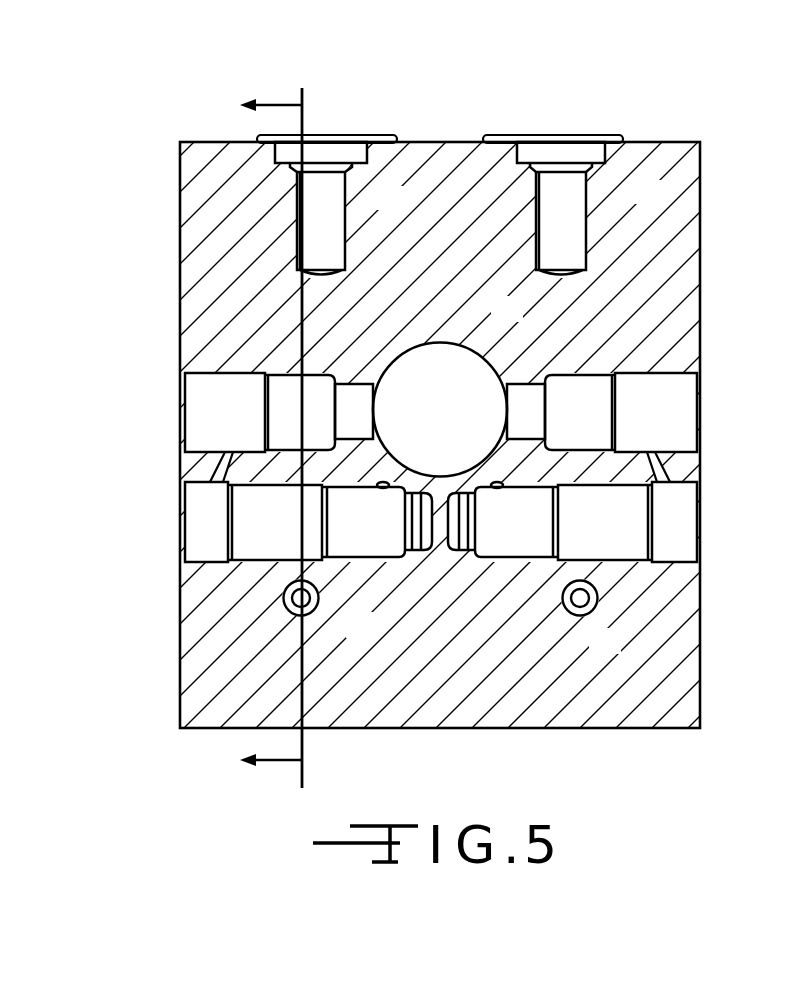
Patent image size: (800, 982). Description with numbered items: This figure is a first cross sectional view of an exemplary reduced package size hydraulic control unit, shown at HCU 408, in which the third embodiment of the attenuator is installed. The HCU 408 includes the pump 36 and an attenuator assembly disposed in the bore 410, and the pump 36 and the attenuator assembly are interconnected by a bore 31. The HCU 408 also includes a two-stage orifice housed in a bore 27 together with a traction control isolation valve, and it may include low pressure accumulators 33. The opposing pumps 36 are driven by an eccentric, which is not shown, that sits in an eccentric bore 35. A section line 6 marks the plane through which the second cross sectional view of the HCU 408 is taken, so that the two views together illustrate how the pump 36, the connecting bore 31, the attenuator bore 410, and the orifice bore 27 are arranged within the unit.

The hydraulic control unit 408 is at (189, 86).
The low pressure accumulator 33 is at (328, 243).
The pump 36 is at (200, 390).
The eccentric bore 35 is at (442, 343).
The bore 31 is at (222, 463).
The bore 410 is at (205, 562).
The bore 27 is at (304, 606).
The section line 6- 6 is at (271, 432).